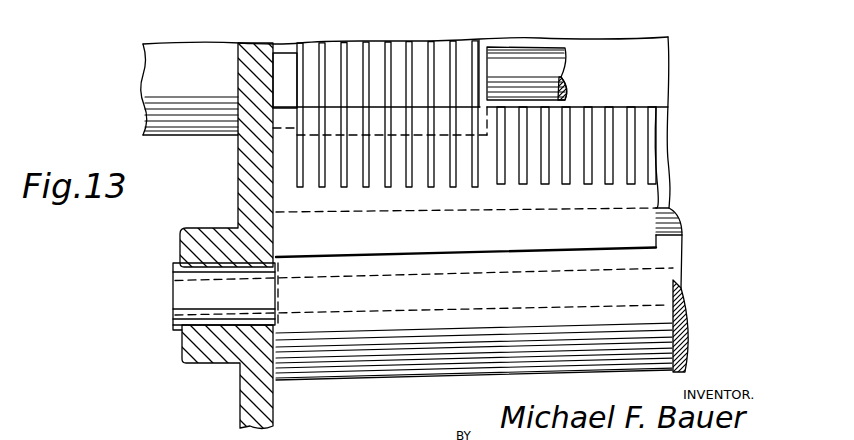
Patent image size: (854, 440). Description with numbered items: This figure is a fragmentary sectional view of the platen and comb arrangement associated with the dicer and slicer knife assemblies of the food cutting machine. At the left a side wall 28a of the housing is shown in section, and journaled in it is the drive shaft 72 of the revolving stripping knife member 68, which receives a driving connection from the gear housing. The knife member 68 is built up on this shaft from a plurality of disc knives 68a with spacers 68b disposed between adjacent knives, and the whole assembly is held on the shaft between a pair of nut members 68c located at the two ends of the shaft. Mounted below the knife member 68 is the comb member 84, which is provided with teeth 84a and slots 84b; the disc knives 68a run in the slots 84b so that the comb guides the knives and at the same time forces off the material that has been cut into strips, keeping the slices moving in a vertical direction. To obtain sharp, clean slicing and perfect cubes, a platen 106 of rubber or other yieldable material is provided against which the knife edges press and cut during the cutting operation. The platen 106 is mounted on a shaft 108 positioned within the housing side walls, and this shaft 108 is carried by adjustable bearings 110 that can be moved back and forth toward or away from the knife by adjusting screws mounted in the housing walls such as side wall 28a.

The side wall of housing 28a is at (245, 408).
The adjustable bearing 110 is at (183, 290).
The stripping knife member 68 is at (387, 93).
The disc knife 68a is at (330, 153).
The spacer 68b is at (375, 50).
The nut member 68c is at (290, 53).
The drive shaft 72 is at (510, 57).
The comb member 84 is at (504, 124).
The teeth 84a is at (613, 143).
The slots 84b is at (630, 105).
The shaft 108 is at (682, 290).
The platen 106 is at (692, 340).